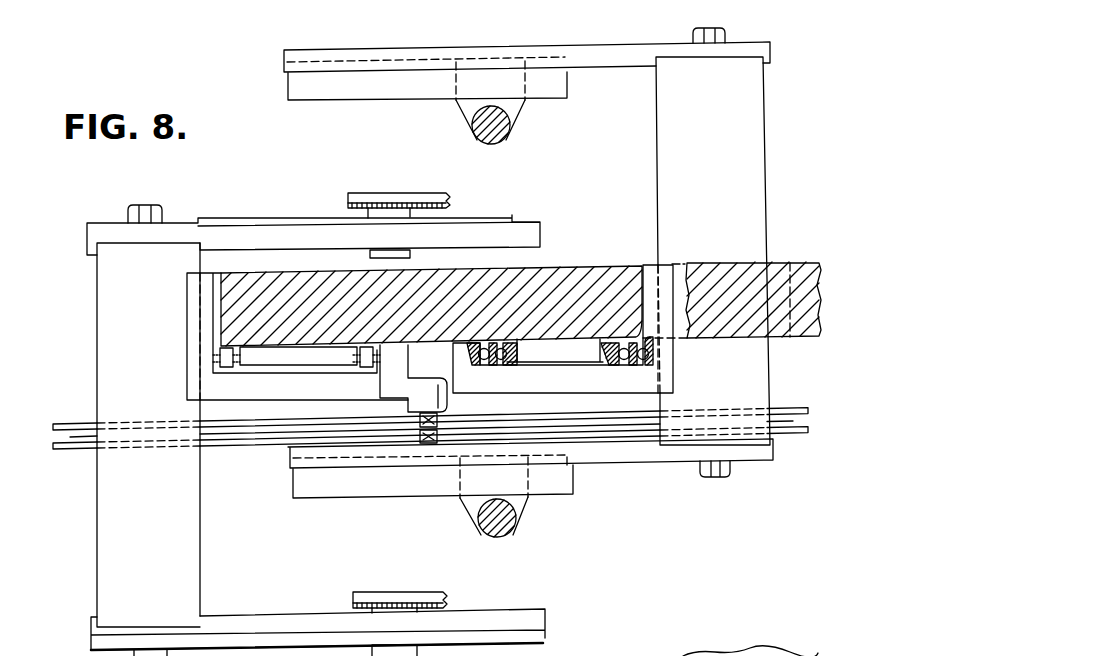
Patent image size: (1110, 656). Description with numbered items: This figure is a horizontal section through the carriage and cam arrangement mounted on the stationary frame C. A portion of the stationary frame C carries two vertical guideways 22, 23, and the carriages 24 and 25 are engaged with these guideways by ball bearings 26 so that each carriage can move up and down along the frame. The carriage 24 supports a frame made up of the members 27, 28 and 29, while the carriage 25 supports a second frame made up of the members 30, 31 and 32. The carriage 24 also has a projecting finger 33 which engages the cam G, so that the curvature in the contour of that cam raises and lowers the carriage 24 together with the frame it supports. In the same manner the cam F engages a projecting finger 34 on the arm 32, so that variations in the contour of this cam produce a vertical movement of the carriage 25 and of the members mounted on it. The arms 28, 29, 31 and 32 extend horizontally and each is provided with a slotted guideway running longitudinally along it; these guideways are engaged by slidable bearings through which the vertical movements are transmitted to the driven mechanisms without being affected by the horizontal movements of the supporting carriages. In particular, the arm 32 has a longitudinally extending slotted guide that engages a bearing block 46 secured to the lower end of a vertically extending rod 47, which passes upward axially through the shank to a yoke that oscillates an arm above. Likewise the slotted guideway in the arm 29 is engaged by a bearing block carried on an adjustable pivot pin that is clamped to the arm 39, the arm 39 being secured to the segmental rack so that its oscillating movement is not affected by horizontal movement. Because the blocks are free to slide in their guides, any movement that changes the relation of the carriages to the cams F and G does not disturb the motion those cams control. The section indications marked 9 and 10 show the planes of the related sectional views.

The inner sleeve 22 is at (270, 355).
The inner bearing sleeve 23 is at (555, 352).
The bearing housing 24 is at (252, 392).
The bearing housing 25 is at (613, 380).
The bearing 26 is at (377, 360).
The side frame member 27 is at (113, 334).
The upper cross bar 28 is at (255, 247).
The lower cross bar 29 is at (300, 616).
The side frame member 30 is at (748, 190).
The upper cross bar 31 is at (585, 55).
The lower cross bar 32 is at (665, 455).
The clamp block 33 is at (450, 408).
The clamp 34 is at (427, 442).
The rack 39 is at (403, 593).
The roller support 46 is at (515, 507).
The roller 47 is at (497, 527).
The shaft C is at (593, 277).
The upper guide rod G is at (82, 424).
The lower guide rod F is at (79, 446).
The section line 9- 9 is at (138, 549).
The section line 10- 10 is at (62, 434).